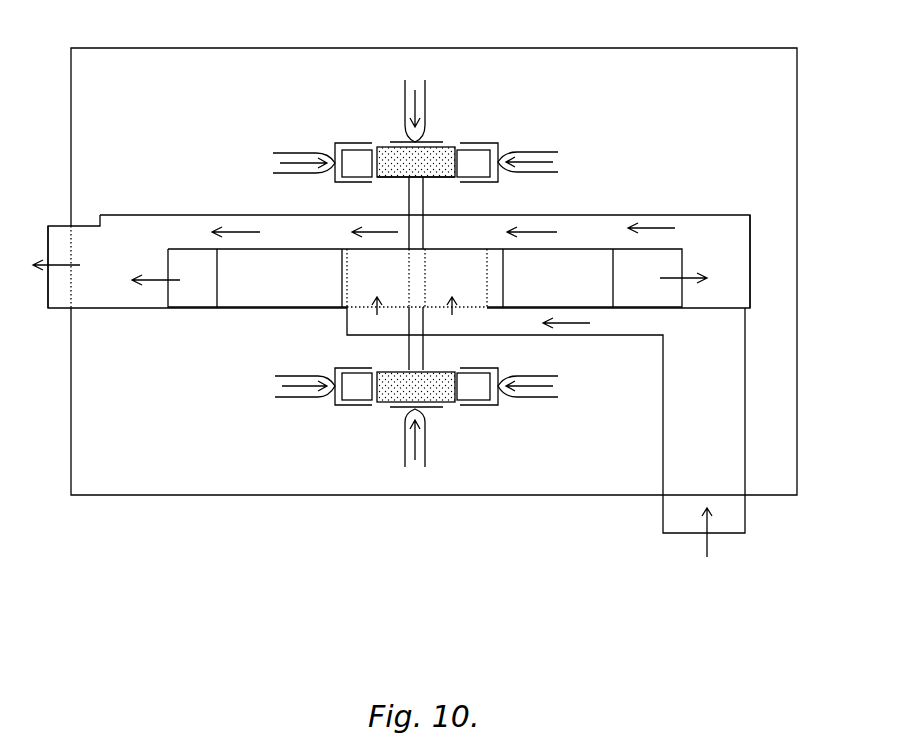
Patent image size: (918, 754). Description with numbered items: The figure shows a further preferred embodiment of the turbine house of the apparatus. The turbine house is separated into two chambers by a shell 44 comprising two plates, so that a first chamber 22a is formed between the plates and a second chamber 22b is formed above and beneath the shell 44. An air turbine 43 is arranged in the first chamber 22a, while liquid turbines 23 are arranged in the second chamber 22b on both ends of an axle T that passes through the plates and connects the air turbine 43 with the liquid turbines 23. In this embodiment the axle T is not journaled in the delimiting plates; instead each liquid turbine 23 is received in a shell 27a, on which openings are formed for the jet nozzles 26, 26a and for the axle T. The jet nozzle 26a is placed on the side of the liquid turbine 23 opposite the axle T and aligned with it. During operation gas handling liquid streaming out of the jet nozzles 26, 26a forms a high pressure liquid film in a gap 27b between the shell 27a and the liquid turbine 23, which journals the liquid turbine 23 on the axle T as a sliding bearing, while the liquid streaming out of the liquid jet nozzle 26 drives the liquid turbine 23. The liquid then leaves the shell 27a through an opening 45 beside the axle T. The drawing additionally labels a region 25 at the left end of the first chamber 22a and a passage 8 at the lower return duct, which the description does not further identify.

The second chamber 22b is at (555, 55).
The first chamber 22a is at (198, 214).
The outlet 25 is at (38, 279).
The shell 44 is at (751, 265).
The gas inlet 8 is at (690, 538).
The air turbine 43 is at (682, 287).
The shell 27a is at (388, 141).
The gap 27b is at (372, 405).
The liquid turbine 23 is at (447, 142).
The opening 45 is at (397, 182).
The jet nozzle 26a is at (402, 103).
The liquid jet nozzle 26 is at (266, 164).